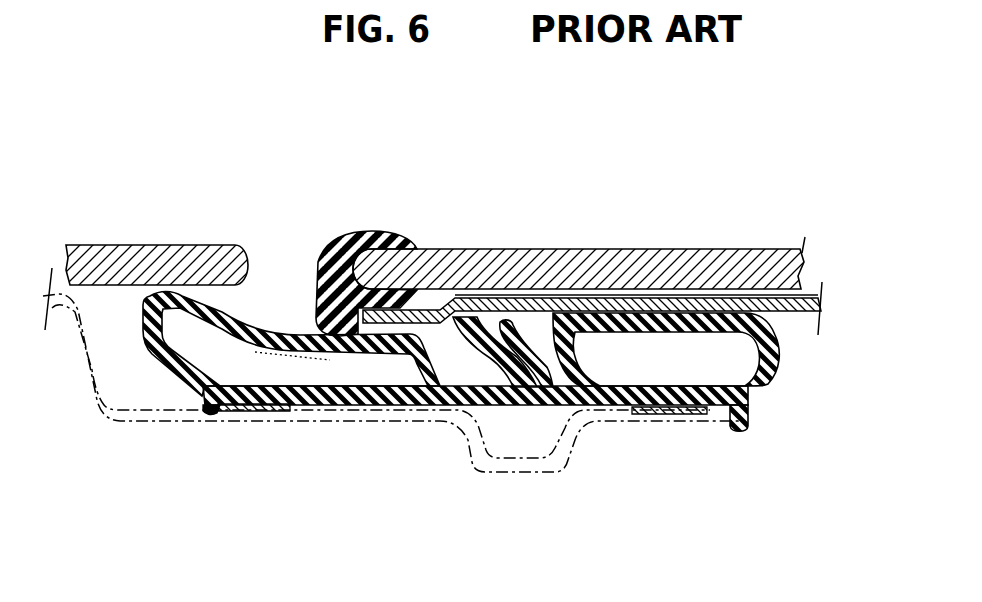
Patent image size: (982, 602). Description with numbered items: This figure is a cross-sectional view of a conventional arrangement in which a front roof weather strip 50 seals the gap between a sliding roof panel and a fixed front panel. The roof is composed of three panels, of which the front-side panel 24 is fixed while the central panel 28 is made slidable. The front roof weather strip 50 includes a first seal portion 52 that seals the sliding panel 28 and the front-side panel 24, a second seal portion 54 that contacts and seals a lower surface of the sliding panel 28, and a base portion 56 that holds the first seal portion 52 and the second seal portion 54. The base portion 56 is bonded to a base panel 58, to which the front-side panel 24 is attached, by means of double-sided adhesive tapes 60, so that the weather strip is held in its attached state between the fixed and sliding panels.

The front-side panel 24 is at (112, 245).
The central panel 28 is at (720, 249).
The first seal portion 52 is at (243, 320).
The second seal portion 54 is at (672, 312).
The base portion 56 is at (318, 404).
The base panel 58 is at (348, 423).
The front roof weather strip 50 is at (398, 409).
The double-sided adhesive tapes 60 is at (253, 405).